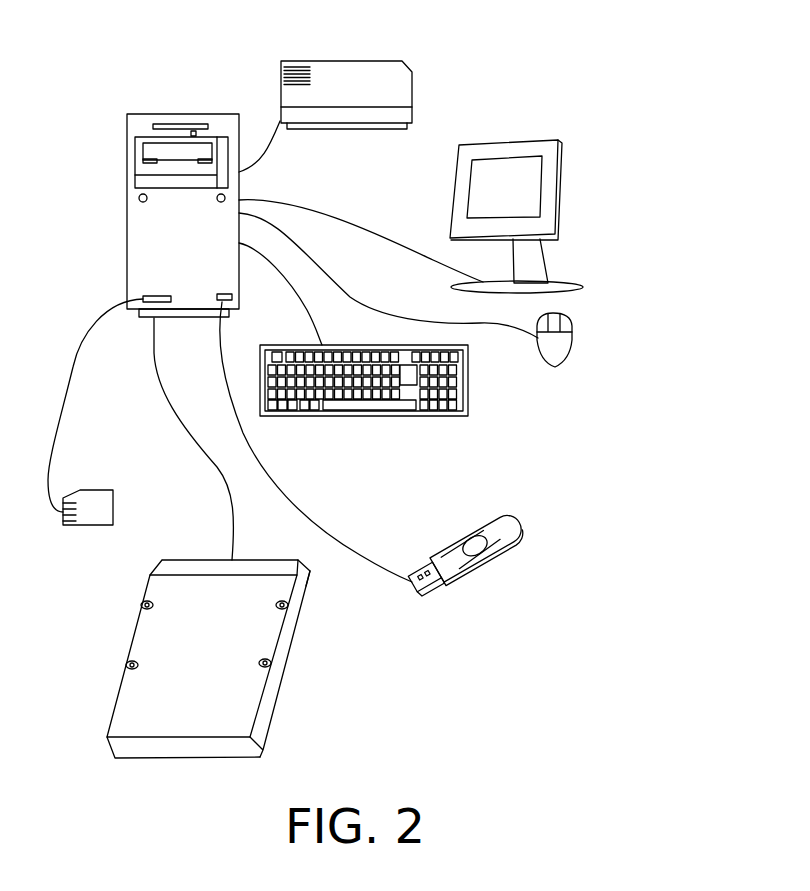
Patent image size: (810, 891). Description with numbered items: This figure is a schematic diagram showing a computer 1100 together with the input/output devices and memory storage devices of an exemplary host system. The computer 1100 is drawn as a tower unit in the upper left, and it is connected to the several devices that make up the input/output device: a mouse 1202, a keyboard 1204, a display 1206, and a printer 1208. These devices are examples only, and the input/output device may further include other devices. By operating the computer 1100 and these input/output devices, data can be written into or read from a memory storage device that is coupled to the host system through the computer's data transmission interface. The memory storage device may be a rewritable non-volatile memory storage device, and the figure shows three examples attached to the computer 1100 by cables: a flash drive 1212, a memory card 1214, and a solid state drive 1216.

The computer 1100 is at (185, 114).
The printer 1208 is at (341, 61).
The display 1206 is at (517, 145).
The mouse 1202 is at (572, 343).
The keyboard 1204 is at (468, 390).
The memory card 1214 is at (113, 497).
The solid state drive (SSD) 1216 is at (262, 540).
The flash drive 1212 is at (457, 537).